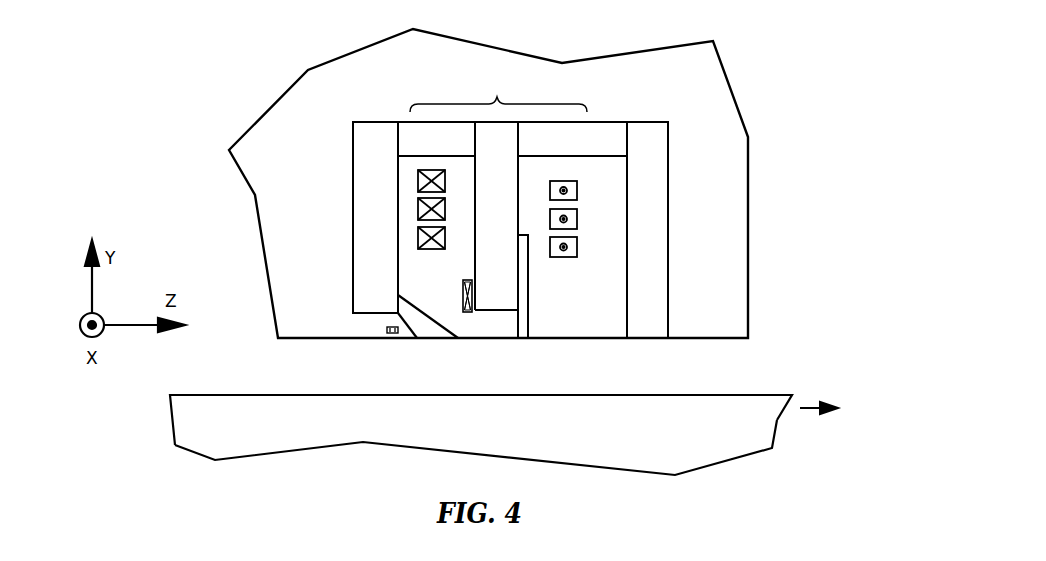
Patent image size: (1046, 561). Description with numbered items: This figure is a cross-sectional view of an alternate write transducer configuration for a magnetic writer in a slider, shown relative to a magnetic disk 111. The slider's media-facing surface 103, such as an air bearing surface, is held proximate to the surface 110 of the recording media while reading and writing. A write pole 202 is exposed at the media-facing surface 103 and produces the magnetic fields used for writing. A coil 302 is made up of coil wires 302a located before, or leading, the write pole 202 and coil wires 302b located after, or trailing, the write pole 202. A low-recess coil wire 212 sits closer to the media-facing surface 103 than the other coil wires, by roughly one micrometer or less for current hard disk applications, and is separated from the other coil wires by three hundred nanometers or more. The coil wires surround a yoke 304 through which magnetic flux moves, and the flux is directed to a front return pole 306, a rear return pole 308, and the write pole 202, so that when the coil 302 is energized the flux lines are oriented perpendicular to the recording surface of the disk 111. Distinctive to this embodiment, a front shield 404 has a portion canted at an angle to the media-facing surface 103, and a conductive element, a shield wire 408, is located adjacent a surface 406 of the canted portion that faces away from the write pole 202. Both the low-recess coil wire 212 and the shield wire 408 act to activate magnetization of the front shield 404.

The media-facing surface 103 is at (733, 338).
The surface of a magnetic recording media 110 is at (640, 395).
The magnetic disk 111 is at (682, 447).
The write pole 202 is at (521, 336).
The low-recess coil wire 212 is at (468, 313).
The coil 302 is at (512, 95).
The coil wires before the write pole 302a is at (392, 209).
The coil wires after the write pole 302b is at (567, 279).
The yoke 304 is at (503, 152).
The front return pole 306 is at (352, 178).
The rear return pole 308 is at (657, 185).
The front shield 404 is at (435, 330).
The surface of the canted portion 406 is at (413, 331).
The shield wire 408 is at (386, 334).